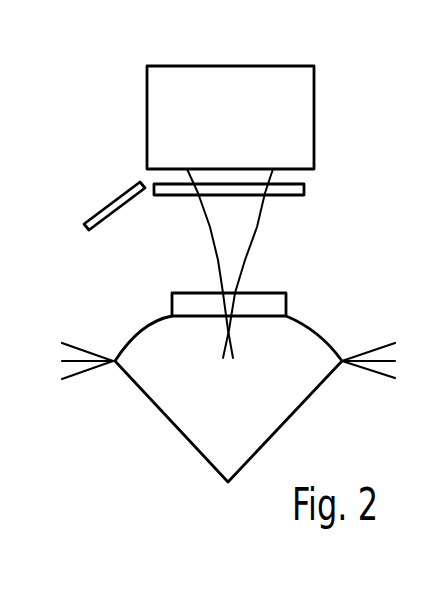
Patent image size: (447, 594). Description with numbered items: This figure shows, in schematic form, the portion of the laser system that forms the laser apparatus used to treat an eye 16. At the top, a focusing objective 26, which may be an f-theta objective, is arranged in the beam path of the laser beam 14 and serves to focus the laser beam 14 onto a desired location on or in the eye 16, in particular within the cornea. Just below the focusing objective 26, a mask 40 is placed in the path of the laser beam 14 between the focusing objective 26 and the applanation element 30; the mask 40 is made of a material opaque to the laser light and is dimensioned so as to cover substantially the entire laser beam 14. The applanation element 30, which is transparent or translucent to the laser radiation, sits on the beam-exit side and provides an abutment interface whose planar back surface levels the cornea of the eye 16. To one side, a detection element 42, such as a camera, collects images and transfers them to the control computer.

The focusing objective 26 is at (237, 133).
The mask 40 is at (292, 190).
The detection element 42 is at (92, 213).
The laser beam 14 is at (237, 242).
The applanation element 30 is at (275, 307).
The eye 16 is at (280, 408).